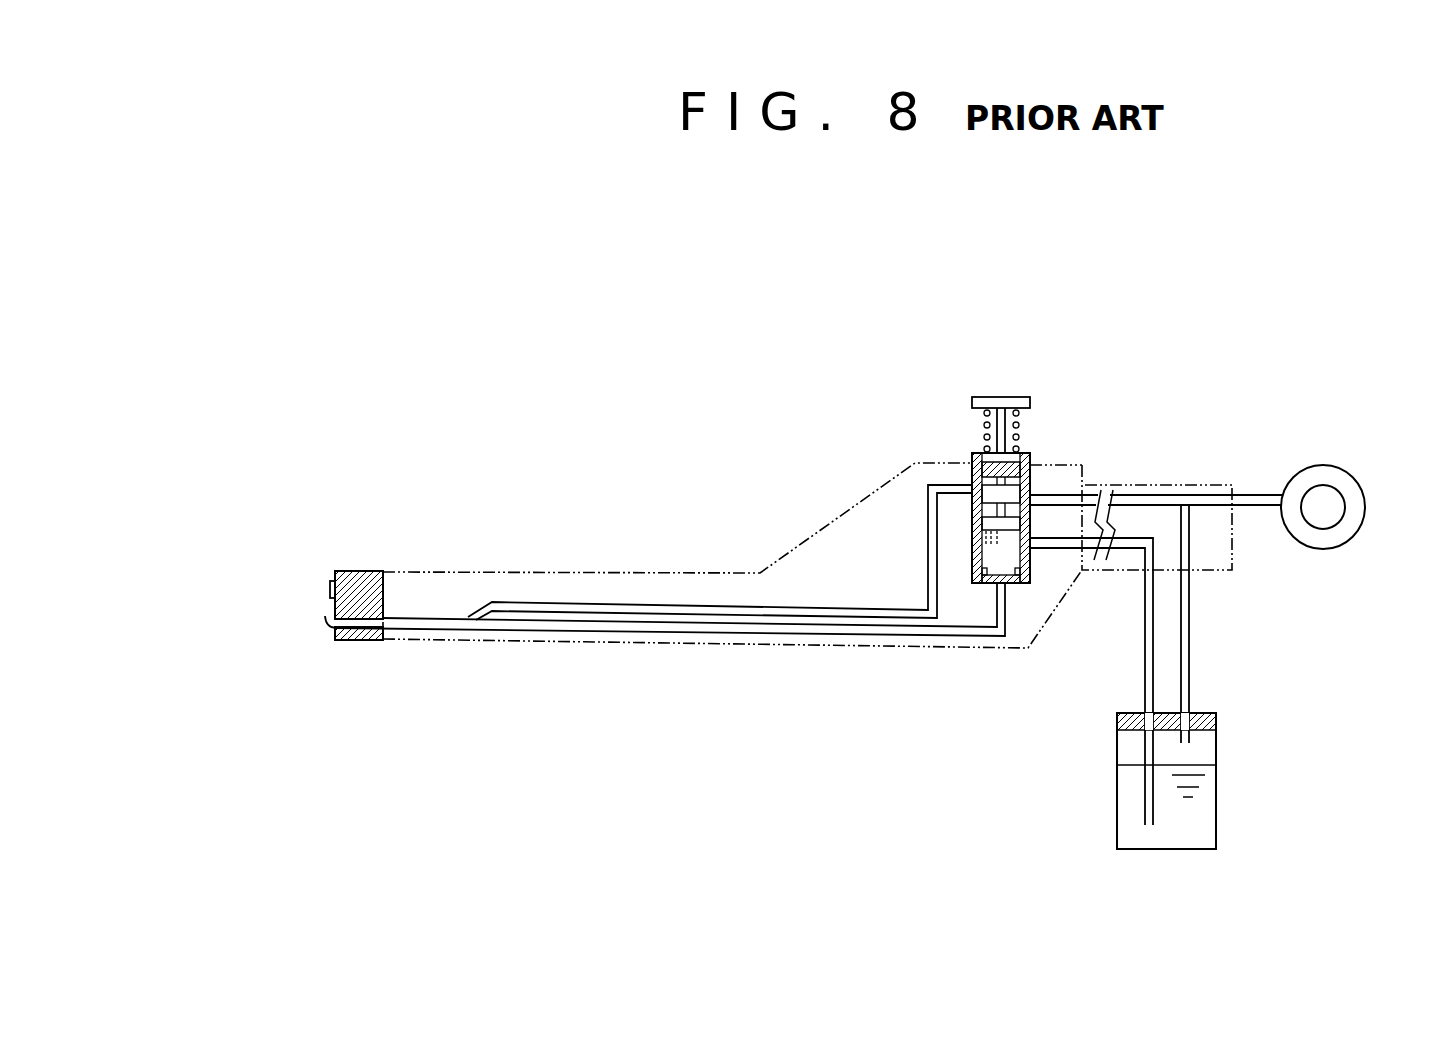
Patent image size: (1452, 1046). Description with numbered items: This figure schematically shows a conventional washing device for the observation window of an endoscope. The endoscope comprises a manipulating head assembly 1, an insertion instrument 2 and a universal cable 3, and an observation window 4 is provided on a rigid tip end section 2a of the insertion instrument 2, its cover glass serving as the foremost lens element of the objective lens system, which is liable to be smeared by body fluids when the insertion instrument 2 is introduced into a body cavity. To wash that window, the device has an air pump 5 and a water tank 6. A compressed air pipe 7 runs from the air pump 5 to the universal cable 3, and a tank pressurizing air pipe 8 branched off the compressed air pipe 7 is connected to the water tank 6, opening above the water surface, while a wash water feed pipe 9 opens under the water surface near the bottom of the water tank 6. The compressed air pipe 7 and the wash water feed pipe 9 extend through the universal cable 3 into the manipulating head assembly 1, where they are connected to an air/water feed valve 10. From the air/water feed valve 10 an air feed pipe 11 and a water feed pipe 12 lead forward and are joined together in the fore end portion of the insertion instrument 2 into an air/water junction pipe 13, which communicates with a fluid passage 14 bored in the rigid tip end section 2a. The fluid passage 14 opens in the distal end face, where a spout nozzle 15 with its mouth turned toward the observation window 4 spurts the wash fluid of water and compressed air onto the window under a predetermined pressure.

The manipulating head assembly 1 is at (917, 650).
The insertion instrument 2 is at (600, 573).
The rigid tip end section 2a is at (362, 573).
The universal cable 3 is at (1207, 485).
The observation window 4 is at (330, 583).
The air pump 5 is at (1350, 470).
The water tank 6 is at (1215, 825).
The compressed air pipe 7 is at (1060, 500).
The tank pressurizing air pipe 8 is at (1193, 640).
The wash water feed pipe 9 is at (1058, 548).
The air/water feed valve 10 is at (972, 455).
The air feed pipe 11 is at (827, 608).
The water feed pipe 12 is at (575, 626).
The air/water junction pipe 13 is at (450, 620).
The fluid passage 14 is at (367, 608).
The spout nozzle 15 is at (325, 616).